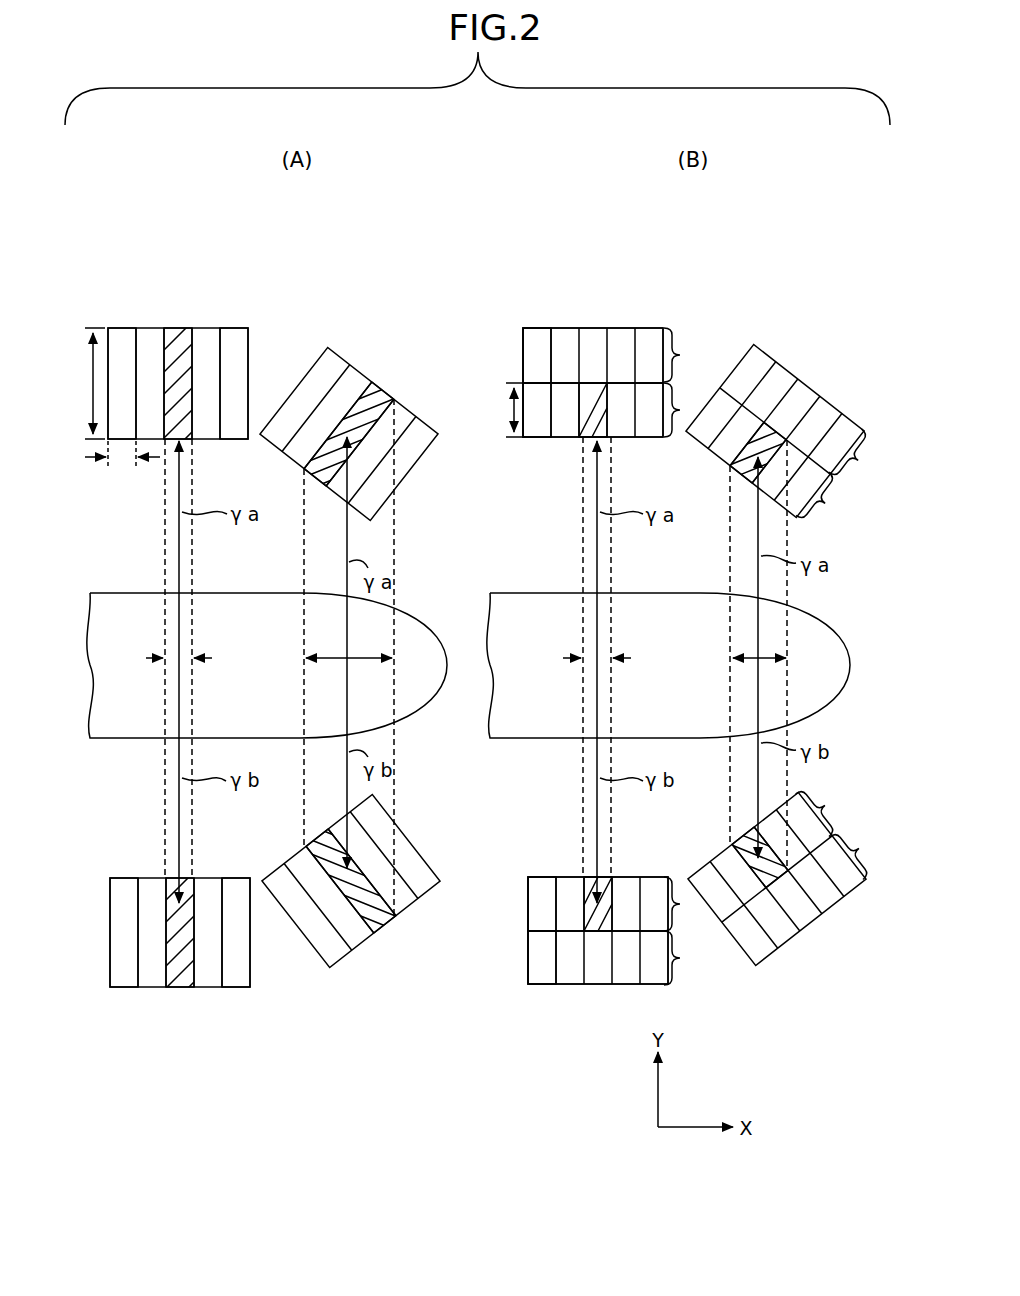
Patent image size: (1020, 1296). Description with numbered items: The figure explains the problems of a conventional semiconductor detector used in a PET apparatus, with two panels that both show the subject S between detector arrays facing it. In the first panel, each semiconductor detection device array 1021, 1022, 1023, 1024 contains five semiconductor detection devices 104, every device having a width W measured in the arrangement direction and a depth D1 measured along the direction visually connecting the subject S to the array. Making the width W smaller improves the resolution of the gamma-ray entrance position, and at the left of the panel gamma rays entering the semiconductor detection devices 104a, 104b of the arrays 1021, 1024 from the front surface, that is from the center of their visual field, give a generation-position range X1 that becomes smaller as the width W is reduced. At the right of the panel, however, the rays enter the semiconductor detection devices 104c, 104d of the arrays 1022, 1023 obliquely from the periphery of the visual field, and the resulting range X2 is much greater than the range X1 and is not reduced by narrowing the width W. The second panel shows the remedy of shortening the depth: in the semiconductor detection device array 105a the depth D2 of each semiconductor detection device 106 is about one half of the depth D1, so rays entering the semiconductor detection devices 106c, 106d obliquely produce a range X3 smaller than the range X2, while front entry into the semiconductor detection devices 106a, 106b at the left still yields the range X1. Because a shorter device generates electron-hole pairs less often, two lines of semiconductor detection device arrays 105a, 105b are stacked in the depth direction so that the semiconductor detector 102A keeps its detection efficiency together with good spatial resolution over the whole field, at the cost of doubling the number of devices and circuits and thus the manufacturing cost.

The semiconductor detection device array 1021 is at (174, 339).
The semiconductor detection device array 1022 is at (367, 403).
The semiconductor detection device array 1023 is at (373, 912).
The semiconductor detection device array 1024 is at (179, 985).
The semiconductor detection device 104 is at (118, 337).
The semiconductor detection device 104a is at (177, 328).
The semiconductor detection device 104b is at (180, 988).
The semiconductor detection device 104c is at (386, 388).
The semiconductor detection device 104d is at (396, 918).
The semiconductor detector 102A is at (596, 270).
The semiconductor detection device 106 is at (538, 337).
The semiconductor detection device 106a is at (596, 383).
The semiconductor detection device 106b is at (598, 931).
The semiconductor detection device 106c is at (810, 389).
The semiconductor detection device 106d is at (813, 925).
The semiconductor detection device array 105a is at (672, 440).
The semiconductor detection device array 105b is at (679, 355).
The subject S is at (131, 593).
The depth D1 is at (94, 388).
The depth D2 is at (512, 408).
The width W is at (133, 460).
The range X1 is at (185, 662).
The range X2 is at (376, 660).
The range X3 is at (781, 660).